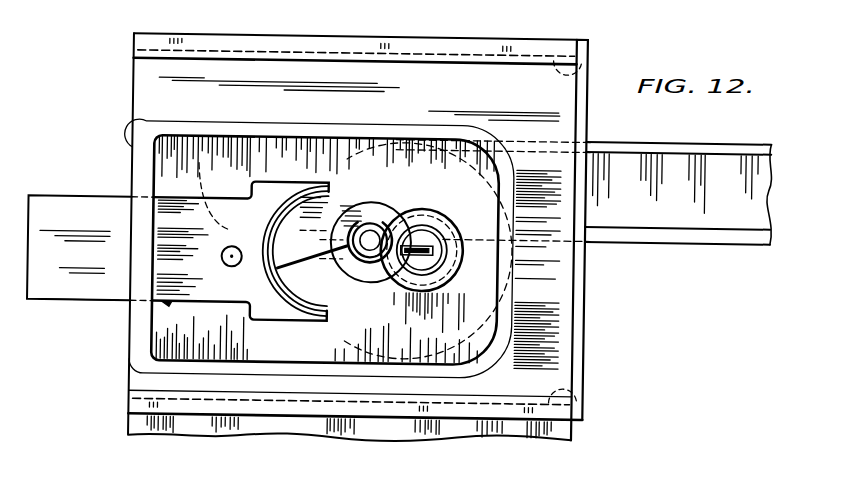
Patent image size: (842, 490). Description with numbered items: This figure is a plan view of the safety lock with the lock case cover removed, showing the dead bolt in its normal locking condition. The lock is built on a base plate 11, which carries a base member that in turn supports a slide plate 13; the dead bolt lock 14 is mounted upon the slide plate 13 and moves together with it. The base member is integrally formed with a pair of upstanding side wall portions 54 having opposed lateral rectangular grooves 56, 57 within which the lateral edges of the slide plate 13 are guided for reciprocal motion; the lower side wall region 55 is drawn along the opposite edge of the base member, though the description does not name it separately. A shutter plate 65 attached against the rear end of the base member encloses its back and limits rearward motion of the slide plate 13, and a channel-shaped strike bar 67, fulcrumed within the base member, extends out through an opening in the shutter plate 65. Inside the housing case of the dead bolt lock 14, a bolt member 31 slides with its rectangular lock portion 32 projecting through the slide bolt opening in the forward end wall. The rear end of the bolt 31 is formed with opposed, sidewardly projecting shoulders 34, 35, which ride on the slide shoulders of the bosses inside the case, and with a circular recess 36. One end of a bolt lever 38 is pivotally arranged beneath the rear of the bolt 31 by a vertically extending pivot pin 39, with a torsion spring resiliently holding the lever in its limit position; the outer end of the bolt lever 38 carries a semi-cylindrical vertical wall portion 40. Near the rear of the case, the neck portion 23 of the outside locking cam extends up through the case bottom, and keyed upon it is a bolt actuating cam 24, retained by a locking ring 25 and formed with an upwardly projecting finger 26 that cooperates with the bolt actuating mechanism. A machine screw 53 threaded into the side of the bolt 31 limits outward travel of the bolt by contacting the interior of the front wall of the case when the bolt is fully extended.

The base plate 11 is at (138, 431).
The slide plate 13 is at (556, 343).
The dead bolt lock 14 is at (25, 258).
The neck portion 23 is at (447, 243).
The bolt actuating cam 24 is at (433, 229).
The locking ring 25 is at (441, 264).
The upwardly projecting finger 26 is at (372, 239).
The bolt member 31 is at (93, 218).
The lock portion 32 is at (72, 305).
The shoulder 34 is at (300, 171).
The shoulder 35 is at (285, 321).
The circular recess 36 is at (309, 267).
The bolt lever 38 is at (353, 211).
The pivot pin 39 is at (225, 251).
The semi-cylindrical vertical wall portion 40 is at (384, 228).
The machine screw 53 is at (169, 308).
The upstanding side wall portions 54 is at (139, 41).
The lower housing plate 55 is at (134, 410).
The lateral rectangular groove 56 is at (582, 62).
The lateral rectangular groove 57 is at (590, 393).
The shutter plate 65 is at (588, 130).
The strike bar 67 is at (695, 163).